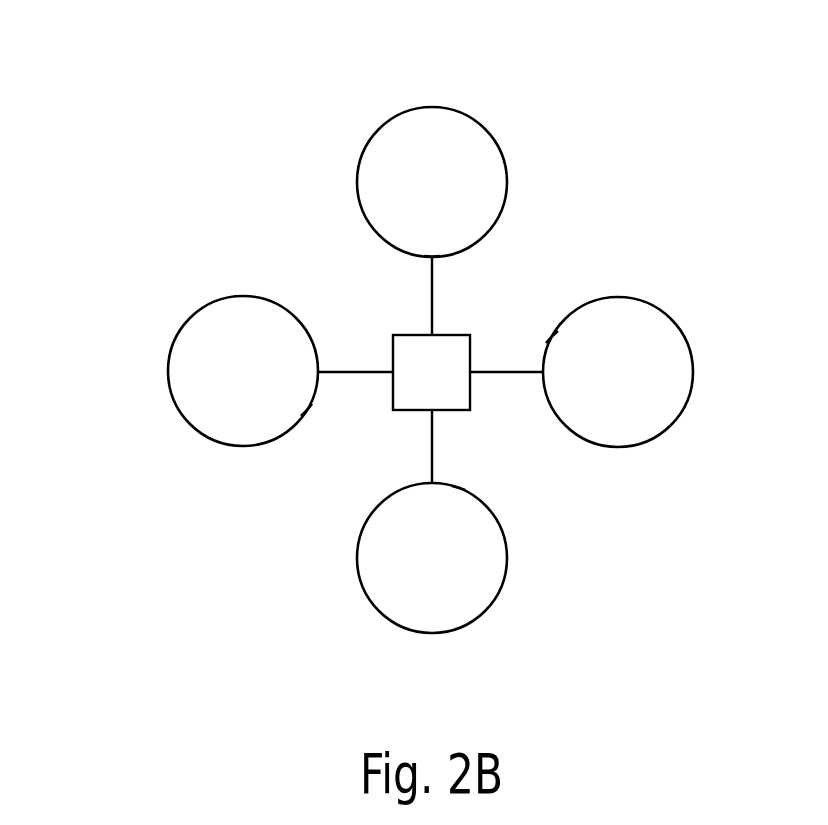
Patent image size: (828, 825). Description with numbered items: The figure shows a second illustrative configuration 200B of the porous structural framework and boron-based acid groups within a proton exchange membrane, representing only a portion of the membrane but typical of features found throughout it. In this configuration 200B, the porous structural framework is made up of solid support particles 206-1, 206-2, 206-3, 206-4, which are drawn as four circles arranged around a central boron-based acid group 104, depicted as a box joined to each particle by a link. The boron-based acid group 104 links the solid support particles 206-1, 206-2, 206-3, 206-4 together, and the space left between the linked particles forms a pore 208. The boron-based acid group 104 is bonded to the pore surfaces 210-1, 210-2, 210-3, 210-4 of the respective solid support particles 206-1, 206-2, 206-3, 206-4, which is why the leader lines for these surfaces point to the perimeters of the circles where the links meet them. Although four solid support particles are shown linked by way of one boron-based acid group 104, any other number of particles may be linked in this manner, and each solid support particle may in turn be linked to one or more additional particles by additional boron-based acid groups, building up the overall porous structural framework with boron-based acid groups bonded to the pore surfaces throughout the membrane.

The second illustrative configuration 200B is at (125, 116).
The boron-based acid group 104 is at (448, 383).
The pore 208 is at (377, 327).
The solid support particle 206-1 is at (458, 196).
The solid support particle 206-2 is at (644, 384).
The solid support particle 206-3 is at (458, 572).
The solid support particle 206-4 is at (270, 385).
The pore surface 210-1 is at (413, 257).
The pore surface 210-2 is at (552, 338).
The pore surface 210-3 is at (458, 487).
The pore surface 210-4 is at (307, 410).